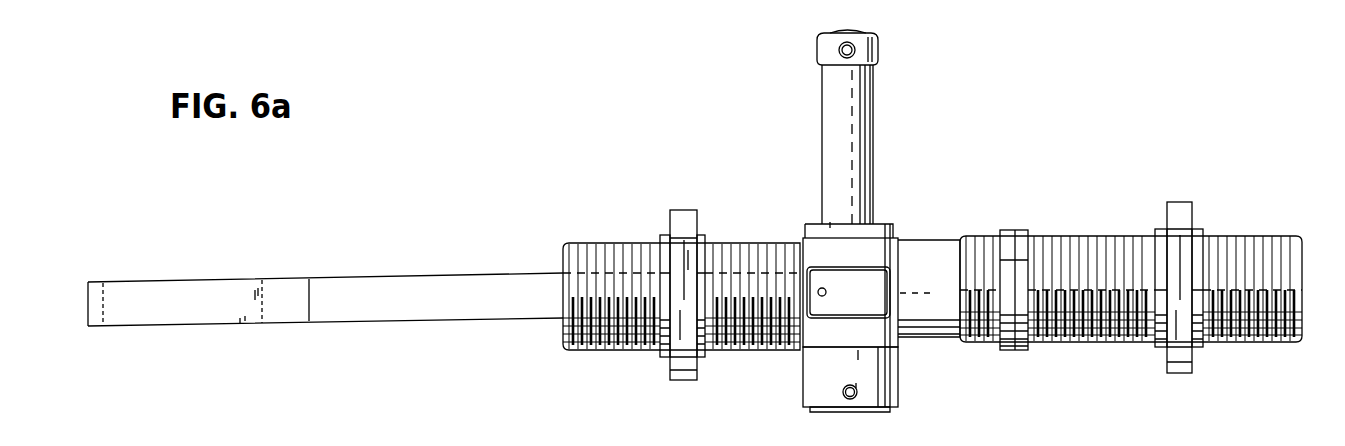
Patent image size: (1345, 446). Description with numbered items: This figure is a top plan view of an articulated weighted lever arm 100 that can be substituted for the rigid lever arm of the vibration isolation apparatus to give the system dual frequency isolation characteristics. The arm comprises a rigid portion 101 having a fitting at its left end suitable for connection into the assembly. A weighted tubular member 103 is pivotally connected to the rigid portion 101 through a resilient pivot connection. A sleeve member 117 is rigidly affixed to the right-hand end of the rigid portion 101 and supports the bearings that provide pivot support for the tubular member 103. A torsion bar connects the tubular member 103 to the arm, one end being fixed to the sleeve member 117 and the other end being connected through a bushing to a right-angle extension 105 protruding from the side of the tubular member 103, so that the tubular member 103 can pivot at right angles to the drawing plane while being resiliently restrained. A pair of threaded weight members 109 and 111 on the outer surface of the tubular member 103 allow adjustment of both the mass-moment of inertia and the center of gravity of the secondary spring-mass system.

The adjustable support assembly 100 is at (380, 218).
The rigid portion 101 is at (402, 287).
The weighted tubular member 103 is at (608, 255).
The right-angle extension 105 is at (898, 365).
The threaded weight member 109 is at (688, 218).
The threaded weight member 111 is at (1183, 213).
The sleeve member 117 is at (862, 128).